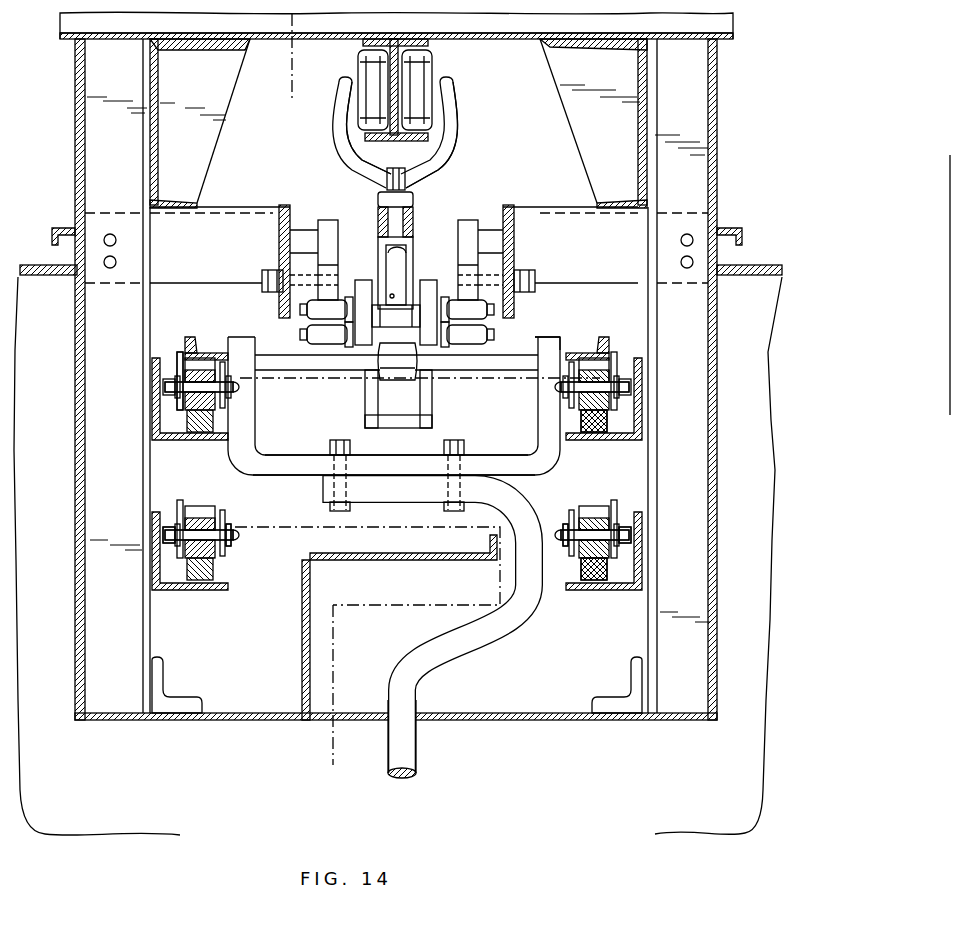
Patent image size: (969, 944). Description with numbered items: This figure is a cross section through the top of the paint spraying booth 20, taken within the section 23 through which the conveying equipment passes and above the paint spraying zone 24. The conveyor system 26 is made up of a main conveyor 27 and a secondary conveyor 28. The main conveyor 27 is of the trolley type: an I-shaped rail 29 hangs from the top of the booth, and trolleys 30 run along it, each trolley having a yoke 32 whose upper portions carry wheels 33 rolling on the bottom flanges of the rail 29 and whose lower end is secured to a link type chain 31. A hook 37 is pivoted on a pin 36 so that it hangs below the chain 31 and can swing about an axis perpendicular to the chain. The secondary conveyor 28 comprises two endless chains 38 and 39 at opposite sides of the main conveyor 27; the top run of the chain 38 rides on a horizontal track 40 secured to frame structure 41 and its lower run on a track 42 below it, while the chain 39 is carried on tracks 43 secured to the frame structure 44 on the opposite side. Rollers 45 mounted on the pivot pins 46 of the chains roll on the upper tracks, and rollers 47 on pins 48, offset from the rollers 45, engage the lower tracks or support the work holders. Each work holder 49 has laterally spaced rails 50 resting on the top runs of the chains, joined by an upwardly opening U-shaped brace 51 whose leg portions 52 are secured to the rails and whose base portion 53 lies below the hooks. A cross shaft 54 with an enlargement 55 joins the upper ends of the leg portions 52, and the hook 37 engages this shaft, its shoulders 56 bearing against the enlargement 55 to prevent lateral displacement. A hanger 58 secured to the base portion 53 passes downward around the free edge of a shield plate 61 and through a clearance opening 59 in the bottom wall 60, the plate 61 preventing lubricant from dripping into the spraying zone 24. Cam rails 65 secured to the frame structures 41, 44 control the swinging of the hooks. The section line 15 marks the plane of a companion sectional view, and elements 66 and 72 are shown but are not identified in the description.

The section line 15- 15 is at (291, 19).
The paint spraying booth 20 is at (697, 805).
The top section of the booth 23 is at (718, 490).
The paint spraying zone 24 is at (185, 812).
The conveyor system 26 is at (460, 157).
The main conveyor 27 is at (420, 210).
The secondary conveyor 28 is at (191, 337).
The track or rail 29 is at (400, 85).
The trolleys 30 is at (455, 118).
The link type chain 31 is at (378, 222).
The yoke 32 is at (343, 153).
The wheels 33 is at (366, 72).
The pin 36 is at (405, 292).
The hook 37 is at (432, 392).
The endless chain 38 is at (177, 361).
The endless chain 39 is at (628, 568).
The horizontal track 40 is at (200, 440).
The frame structure 41 is at (133, 318).
The track 42 is at (193, 592).
The tracks 43 is at (605, 428).
The frame structure 44 is at (663, 308).
The rollers 45 is at (186, 410).
The pivot pins 46 is at (216, 388).
The rollers 47 is at (190, 563).
The pins 48 is at (230, 550).
The work holder 49 is at (522, 340).
The rails 50 is at (207, 352).
The U-shaped brace 51 is at (268, 443).
The leg portions 52 is at (244, 347).
The base portion 53 is at (380, 465).
The cross shaft 54 is at (333, 360).
The enlargement 55 is at (393, 370).
The shoulders 56 is at (378, 428).
The hanger 58 is at (514, 620).
The clearance opening 59 is at (428, 710).
The bottom wall 60 is at (550, 718).
The plate 61 is at (388, 566).
The cam rails 65 is at (470, 228).
The bolt 66 is at (340, 312).
The bolt 72 is at (480, 336).